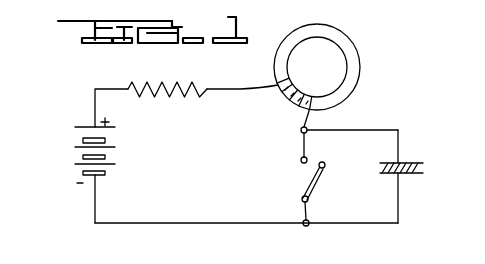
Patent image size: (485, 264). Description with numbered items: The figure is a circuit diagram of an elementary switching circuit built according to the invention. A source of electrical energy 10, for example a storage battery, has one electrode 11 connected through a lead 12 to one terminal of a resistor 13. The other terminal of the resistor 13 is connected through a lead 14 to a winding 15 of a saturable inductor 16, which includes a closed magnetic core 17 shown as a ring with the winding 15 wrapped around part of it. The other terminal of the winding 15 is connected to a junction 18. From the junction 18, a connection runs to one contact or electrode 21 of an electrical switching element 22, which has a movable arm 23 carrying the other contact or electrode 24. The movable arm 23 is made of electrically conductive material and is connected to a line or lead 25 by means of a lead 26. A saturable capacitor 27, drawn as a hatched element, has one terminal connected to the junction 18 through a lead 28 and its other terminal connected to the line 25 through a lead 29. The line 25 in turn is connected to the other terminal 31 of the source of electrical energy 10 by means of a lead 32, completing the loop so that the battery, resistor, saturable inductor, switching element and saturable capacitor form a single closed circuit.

The source of electrical energy 10 is at (108, 158).
The electrode 11 is at (87, 127).
The lead 12 is at (95, 108).
The resistor 13 is at (163, 88).
The lead 14 is at (237, 91).
The winding 15 is at (290, 98).
The saturable inductor 16 is at (340, 63).
The closed magnetic core 17 is at (343, 47).
The junction 18 is at (307, 128).
The contact or electrode 21 is at (301, 160).
The electrical switching element 22 is at (333, 181).
The movable arm 23 is at (318, 178).
The contact or electrode 24 is at (324, 162).
The line or lead 25 is at (188, 225).
The lead 26 is at (303, 208).
The saturable capacitor 27 is at (423, 167).
The lead 28 is at (398, 148).
The lead 29 is at (398, 200).
The terminal 31 is at (95, 177).
The lead 32 is at (95, 206).